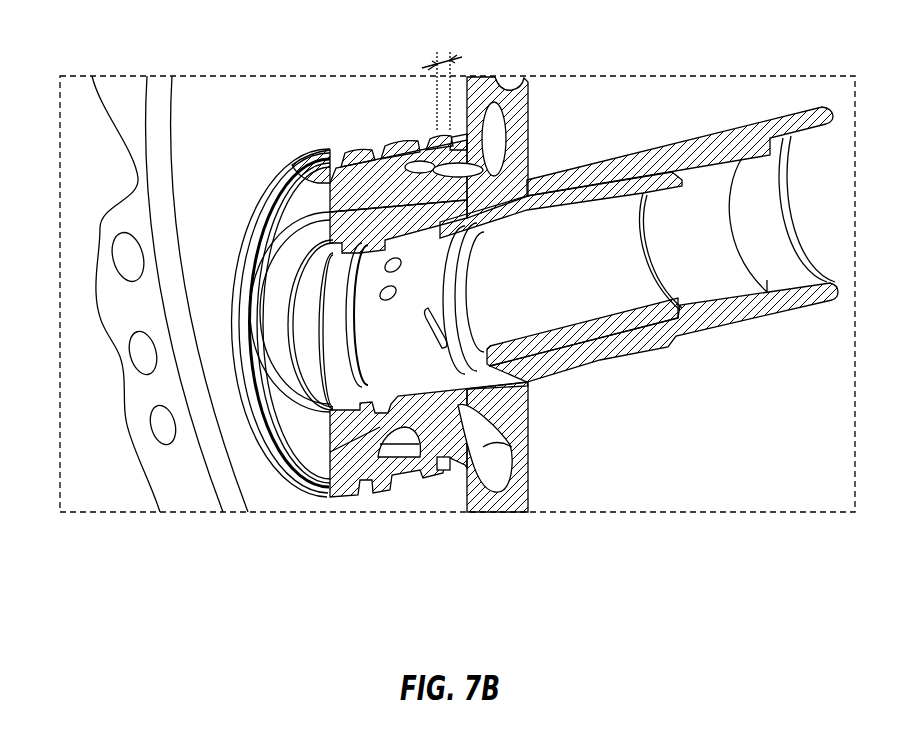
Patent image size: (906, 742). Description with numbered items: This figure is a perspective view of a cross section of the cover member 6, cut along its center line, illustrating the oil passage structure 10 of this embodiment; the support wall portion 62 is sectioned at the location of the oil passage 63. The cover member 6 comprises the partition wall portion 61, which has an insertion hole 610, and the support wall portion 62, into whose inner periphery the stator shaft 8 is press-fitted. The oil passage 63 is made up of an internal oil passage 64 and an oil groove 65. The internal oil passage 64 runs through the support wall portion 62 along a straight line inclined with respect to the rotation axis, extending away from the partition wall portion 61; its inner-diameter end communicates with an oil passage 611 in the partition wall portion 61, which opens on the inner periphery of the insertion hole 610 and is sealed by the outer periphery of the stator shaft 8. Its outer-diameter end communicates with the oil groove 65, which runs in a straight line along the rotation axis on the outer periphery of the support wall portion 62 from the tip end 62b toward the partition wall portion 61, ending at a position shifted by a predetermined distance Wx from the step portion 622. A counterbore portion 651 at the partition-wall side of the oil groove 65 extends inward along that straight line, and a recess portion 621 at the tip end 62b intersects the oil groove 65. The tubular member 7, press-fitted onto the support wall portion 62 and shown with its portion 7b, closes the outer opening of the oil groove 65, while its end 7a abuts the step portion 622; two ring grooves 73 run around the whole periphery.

The cover member 6 is at (402, 350).
The partition wall portion 61 is at (529, 325).
The insertion hole 610 is at (543, 390).
The oil passage 611 is at (500, 157).
The support wall portion 62 is at (366, 387).
The tip end 62b is at (327, 462).
The recess portion 621 is at (282, 202).
The step portion 622 is at (516, 140).
The oil passage 63 is at (514, 279).
The internal oil passage 64 is at (490, 212).
The oil groove 65 is at (423, 283).
The counterbore portion 651 is at (395, 180).
The tubular member 7 is at (435, 118).
The end 7a is at (488, 115).
The ring member flange 7b is at (295, 178).
The ring grooves 73 is at (337, 150).
The stator shaft 8 is at (645, 150).
The oil passage structure 10 is at (308, 220).
The predetermined distance Wx is at (442, 77).